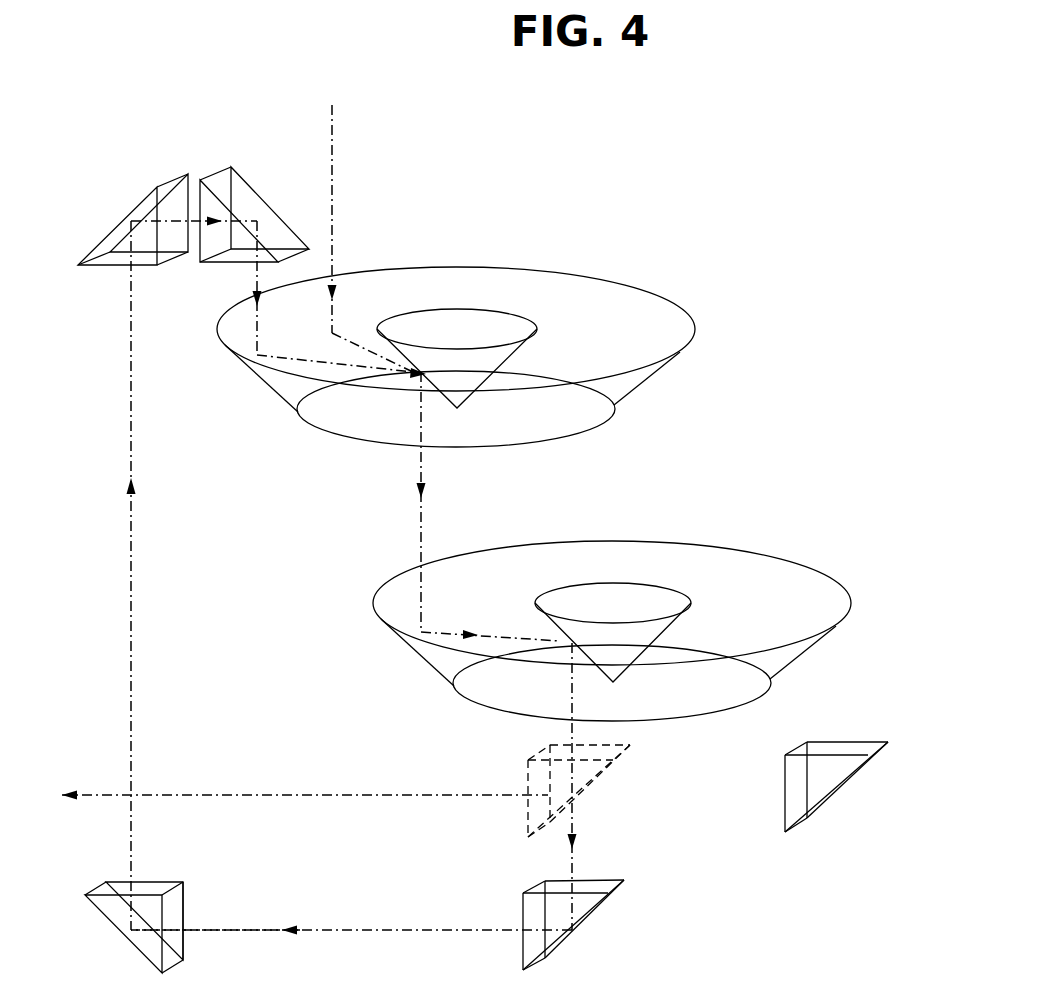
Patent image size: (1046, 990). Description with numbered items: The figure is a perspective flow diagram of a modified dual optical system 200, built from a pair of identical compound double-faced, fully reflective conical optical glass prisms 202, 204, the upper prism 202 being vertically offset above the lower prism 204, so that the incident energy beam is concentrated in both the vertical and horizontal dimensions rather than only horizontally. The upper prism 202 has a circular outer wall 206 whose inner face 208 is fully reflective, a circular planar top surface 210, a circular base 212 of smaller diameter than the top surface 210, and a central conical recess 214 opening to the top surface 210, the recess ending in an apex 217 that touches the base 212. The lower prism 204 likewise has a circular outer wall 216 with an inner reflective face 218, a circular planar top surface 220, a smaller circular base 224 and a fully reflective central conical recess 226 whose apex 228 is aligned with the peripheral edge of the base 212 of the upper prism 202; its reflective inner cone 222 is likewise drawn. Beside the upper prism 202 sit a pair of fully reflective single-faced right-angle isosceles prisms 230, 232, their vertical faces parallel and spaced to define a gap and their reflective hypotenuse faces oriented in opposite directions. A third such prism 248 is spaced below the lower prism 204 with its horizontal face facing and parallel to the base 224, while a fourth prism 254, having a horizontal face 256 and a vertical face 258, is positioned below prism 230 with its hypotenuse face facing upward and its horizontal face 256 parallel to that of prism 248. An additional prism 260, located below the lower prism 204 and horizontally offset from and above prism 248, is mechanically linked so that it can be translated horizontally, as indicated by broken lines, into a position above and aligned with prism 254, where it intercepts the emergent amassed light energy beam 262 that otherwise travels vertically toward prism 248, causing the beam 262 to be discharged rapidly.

The dual array system 200 is at (613, 165).
The compound double-faced conical optical glass prism 202 is at (514, 339).
The compound double-faced conical optical glass prism 204 is at (642, 622).
The circular outer wall 206 is at (665, 370).
The inner reflective face 208 is at (431, 275).
The circular planar top surface 210 is at (595, 296).
The circular base 212 is at (576, 410).
The central conical recess 214 is at (464, 321).
The circular outer wall 216 is at (815, 655).
The apex 217 is at (457, 408).
The inner reflective face 218 is at (505, 565).
The circular planar top surface 220 is at (758, 548).
The inner conical mirror of second assembly 222 is at (545, 625).
The circular base 224 is at (711, 700).
The central conical recess 226 is at (610, 600).
The apex 228 is at (613, 682).
The single-faced right-angle isosceles optical glass prism 230 is at (131, 196).
The single-faced right-angle isosceles optical glass prism 232 is at (303, 127).
The third single-faced right-angle isosceles optical glass prism 248 is at (212, 912).
The fourth single-faced right-angle isosceles optical glass prism 254 is at (592, 921).
The horizontal face 256 is at (157, 890).
The vertical face 258 is at (185, 895).
The additional single-faced right-angle isosceles optical glass prism 260 is at (850, 779).
The emergent amassed light energy beam 262 is at (572, 865).